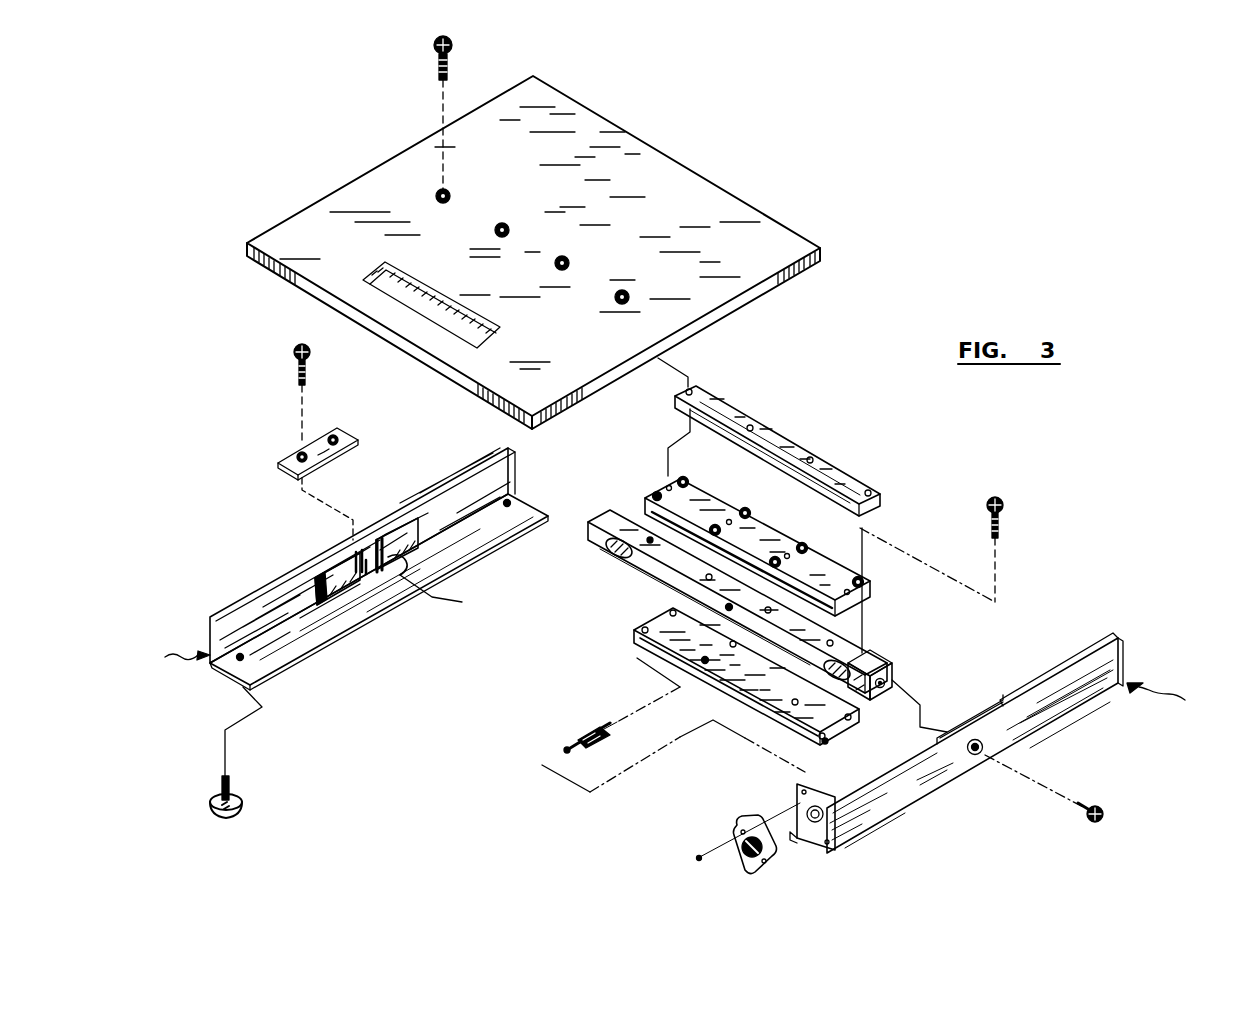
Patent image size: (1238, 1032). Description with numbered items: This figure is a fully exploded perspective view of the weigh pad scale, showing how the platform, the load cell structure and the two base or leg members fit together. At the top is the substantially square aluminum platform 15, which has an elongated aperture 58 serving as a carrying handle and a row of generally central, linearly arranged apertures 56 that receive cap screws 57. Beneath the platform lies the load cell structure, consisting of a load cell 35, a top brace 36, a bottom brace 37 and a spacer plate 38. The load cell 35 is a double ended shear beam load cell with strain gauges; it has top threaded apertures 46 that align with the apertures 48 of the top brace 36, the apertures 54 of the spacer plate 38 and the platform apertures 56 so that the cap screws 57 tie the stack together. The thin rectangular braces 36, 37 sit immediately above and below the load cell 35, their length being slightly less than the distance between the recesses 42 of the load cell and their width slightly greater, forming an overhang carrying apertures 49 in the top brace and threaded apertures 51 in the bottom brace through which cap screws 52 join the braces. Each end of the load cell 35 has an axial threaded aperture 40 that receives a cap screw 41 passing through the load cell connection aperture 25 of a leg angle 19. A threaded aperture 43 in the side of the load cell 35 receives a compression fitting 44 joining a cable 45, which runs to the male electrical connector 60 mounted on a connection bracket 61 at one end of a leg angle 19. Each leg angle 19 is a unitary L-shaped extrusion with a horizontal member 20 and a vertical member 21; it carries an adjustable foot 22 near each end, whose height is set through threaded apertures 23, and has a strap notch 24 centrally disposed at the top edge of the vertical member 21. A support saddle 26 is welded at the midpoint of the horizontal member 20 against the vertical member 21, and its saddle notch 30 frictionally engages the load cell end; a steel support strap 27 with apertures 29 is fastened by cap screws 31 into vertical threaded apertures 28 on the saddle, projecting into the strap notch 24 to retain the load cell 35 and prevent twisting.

The platform 15 is at (822, 243).
The leg angle 19 is at (674, 679).
The horizontal member 20 is at (302, 643).
The vertical member 21 is at (262, 598).
The adjustable foot 22 is at (248, 802).
The threaded aperture 23 is at (238, 662).
The strap notch 24 is at (378, 536).
The load cell connection aperture 25 is at (975, 757).
The support saddle 26 is at (360, 593).
The support strap 27 is at (350, 436).
The vertical threaded aperture 28 is at (353, 555).
The aperture 29 is at (290, 455).
The saddle notch 30 is at (432, 591).
The cap screw 31 is at (297, 372).
The load cell 35 is at (877, 663).
The top brace 36 is at (877, 592).
The bottom brace 37 is at (630, 632).
The spacer plate 38 is at (850, 478).
The threaded aperture 40 is at (893, 686).
The cap screw 41 is at (1097, 825).
The recess 42 is at (614, 553).
The threaded aperture 43 is at (725, 606).
The compression fitting 44 is at (595, 727).
The cable 45 is at (568, 748).
The top threaded aperture 46 is at (839, 645).
The aperture 48 is at (752, 532).
The aperture 49 is at (686, 480).
The aperture 51 is at (705, 665).
The cap screw 52 is at (1003, 517).
The aperture 54 is at (752, 425).
The aperture 56 is at (448, 192).
The cap screw 57 is at (437, 62).
The elongated aperture 58 is at (500, 333).
The electrical connector 60 is at (775, 855).
The connection bracket 61 is at (795, 790).